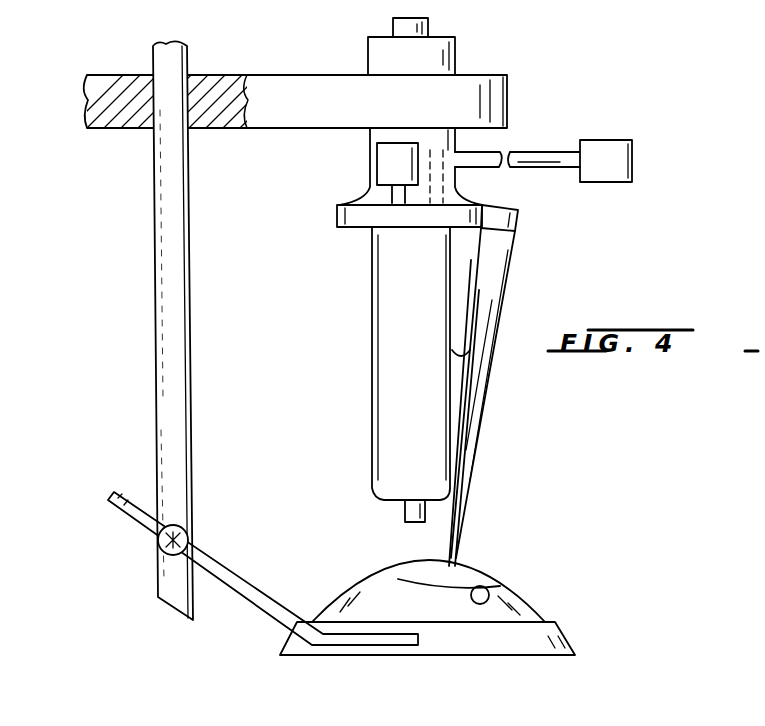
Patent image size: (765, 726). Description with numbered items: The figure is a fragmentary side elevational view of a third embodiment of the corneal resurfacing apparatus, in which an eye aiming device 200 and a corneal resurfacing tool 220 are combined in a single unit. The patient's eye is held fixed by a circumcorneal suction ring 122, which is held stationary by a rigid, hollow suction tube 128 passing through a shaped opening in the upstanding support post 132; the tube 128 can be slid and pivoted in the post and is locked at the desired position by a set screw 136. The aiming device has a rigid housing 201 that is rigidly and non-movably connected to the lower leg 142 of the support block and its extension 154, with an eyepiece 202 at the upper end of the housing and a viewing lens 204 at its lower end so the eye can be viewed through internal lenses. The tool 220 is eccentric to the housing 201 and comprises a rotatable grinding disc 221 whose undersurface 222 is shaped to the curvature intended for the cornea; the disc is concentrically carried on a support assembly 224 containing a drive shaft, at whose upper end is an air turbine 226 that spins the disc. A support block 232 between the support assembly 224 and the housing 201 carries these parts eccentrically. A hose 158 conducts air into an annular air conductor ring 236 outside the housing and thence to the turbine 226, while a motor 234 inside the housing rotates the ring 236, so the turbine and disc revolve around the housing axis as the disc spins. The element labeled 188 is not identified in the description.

The circumcorneal suction ring 122 is at (288, 640).
The suction tube 128 is at (124, 512).
The support post 132 is at (190, 360).
The set screw 136 is at (164, 552).
The lower leg 142 is at (268, 73).
The extension 154 is at (507, 92).
The hose 158 is at (543, 148).
The actuator block 188 is at (632, 165).
The eye aiming device 200 is at (354, 341).
The housing 201 is at (367, 47).
The eyepiece 202 is at (428, 28).
The viewing lens 204 is at (405, 520).
The corneal resurfacing tool 220 is at (487, 456).
The grinding disc 221 is at (478, 575).
The undersurface 222 is at (490, 596).
The support assembly 224 is at (486, 421).
The air turbine 226 is at (518, 222).
The support block 232 is at (472, 268).
The motor 234 is at (376, 160).
The annular air conductor ring 236 is at (336, 216).